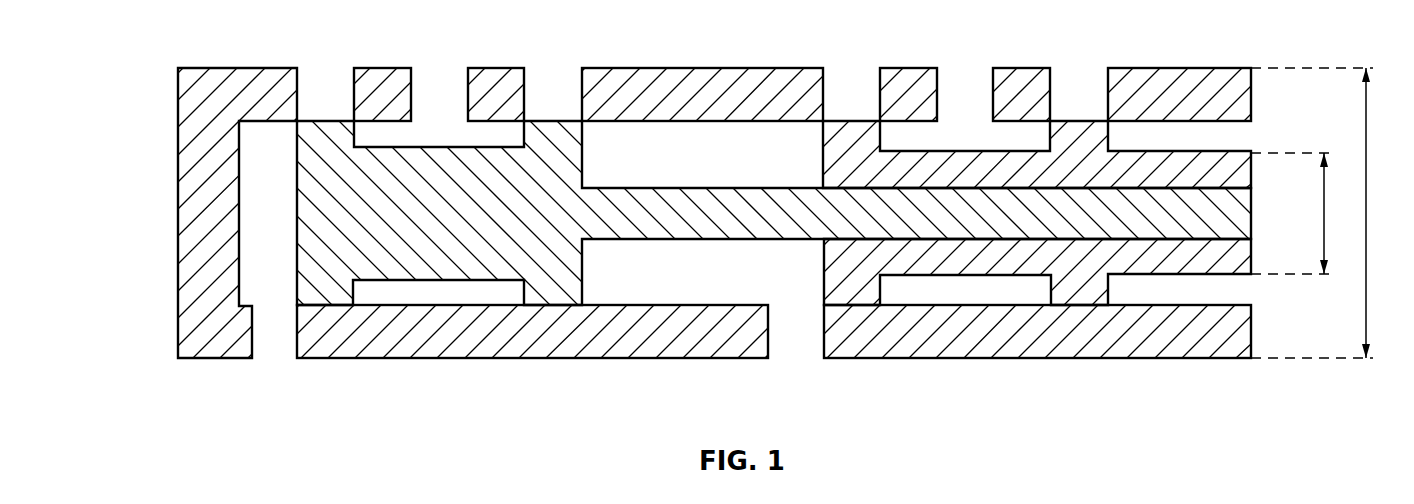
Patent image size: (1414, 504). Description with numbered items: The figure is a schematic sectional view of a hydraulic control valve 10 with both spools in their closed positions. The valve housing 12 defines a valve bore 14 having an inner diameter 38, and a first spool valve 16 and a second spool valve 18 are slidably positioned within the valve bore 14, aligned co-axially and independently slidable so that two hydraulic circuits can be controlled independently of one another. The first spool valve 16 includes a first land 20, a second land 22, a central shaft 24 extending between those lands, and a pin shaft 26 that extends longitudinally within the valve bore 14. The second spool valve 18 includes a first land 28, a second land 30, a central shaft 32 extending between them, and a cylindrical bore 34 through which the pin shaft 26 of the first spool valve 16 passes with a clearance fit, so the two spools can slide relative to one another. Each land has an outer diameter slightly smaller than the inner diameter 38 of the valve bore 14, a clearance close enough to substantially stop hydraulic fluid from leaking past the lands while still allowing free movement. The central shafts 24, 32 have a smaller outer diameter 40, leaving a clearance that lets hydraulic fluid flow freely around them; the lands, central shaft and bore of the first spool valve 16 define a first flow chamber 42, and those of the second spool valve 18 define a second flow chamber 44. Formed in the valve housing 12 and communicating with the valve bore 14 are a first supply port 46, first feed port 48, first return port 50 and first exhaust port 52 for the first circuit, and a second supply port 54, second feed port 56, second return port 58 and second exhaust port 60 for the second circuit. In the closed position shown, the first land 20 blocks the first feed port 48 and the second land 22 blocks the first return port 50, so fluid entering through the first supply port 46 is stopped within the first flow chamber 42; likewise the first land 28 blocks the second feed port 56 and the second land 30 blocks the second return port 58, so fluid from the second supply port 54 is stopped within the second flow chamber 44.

The hydraulic control valve 10 is at (327, 420).
The valve housing 12 is at (1197, 333).
The valve bore 14 is at (785, 135).
The first spool valve 16 is at (322, 263).
The second spool valve 18 is at (995, 267).
The first land 20 is at (307, 292).
The second land 22 is at (555, 293).
The central shaft 24 is at (368, 68).
The pin shaft 26 is at (774, 211).
The first land 28 is at (853, 297).
The second land 30 is at (1087, 292).
The central shaft 32 is at (992, 157).
The cylindrical bore 34 is at (1214, 196).
The inner diameter 38 is at (1366, 215).
The outer diameter 40 is at (1324, 215).
The first flow chamber 42 is at (511, 68).
The second flow chamber 44 is at (937, 138).
The first supply port 46 is at (425, 68).
The first feed port 48 is at (550, 68).
The first return port 50 is at (319, 68).
The first exhaust port 52 is at (277, 345).
The second supply port 54 is at (952, 102).
The second feed port 56 is at (1081, 78).
The second return port 58 is at (862, 70).
The second exhaust port 60 is at (802, 344).